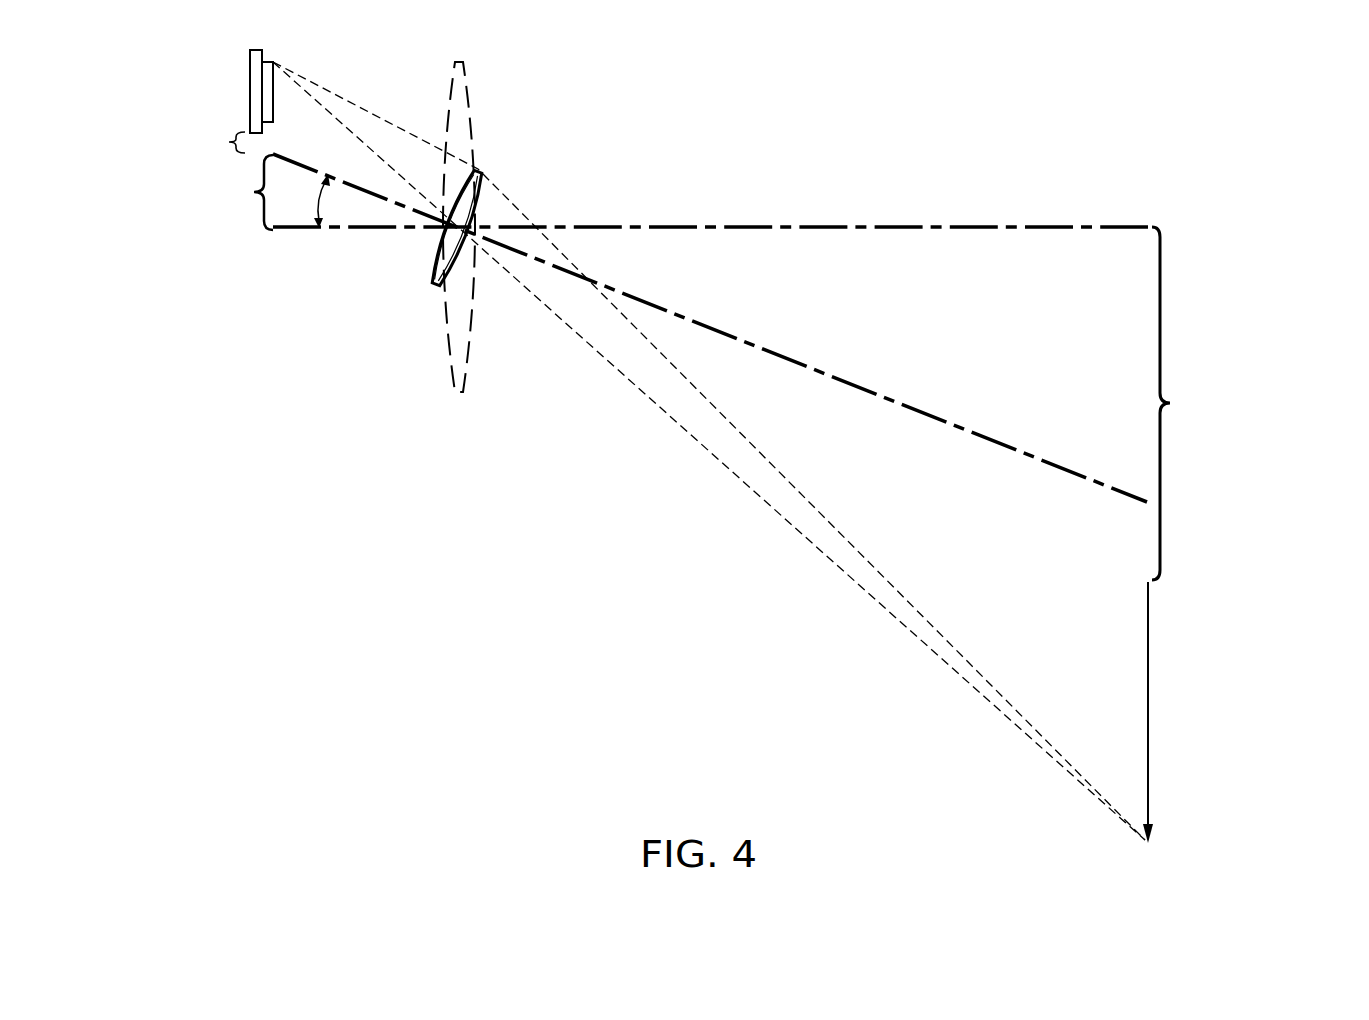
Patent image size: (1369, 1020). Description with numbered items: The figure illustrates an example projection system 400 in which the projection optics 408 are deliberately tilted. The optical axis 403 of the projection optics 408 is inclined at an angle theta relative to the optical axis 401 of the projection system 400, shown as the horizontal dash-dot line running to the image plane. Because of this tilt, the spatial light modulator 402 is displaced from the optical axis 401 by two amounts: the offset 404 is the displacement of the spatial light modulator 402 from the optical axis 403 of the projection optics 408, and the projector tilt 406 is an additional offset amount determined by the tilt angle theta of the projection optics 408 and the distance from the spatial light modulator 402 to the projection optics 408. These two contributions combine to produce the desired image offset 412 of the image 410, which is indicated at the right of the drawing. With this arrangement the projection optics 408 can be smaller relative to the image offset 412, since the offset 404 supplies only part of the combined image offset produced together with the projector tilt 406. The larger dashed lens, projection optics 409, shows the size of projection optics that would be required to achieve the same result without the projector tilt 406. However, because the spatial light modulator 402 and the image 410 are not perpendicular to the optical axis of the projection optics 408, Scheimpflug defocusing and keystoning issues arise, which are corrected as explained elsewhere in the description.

The projection system 400 is at (273, 677).
The optical axis of projection system 401 is at (748, 226).
The spatial light modulator 402 is at (250, 93).
The optical axis of projection optics 403 is at (787, 355).
The offset 404 is at (167, 129).
The projector tilt 406 is at (197, 195).
The projection optics 408 is at (478, 172).
The projection optics 409 is at (457, 62).
The image 410 is at (1148, 706).
The image offset 412 is at (1244, 403).